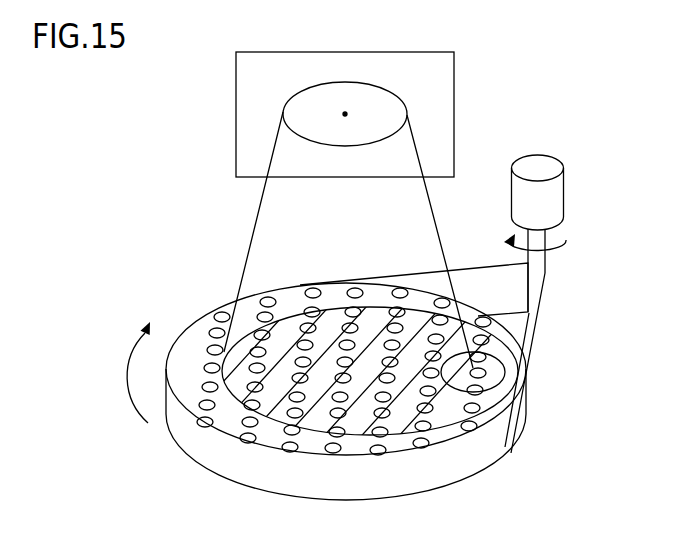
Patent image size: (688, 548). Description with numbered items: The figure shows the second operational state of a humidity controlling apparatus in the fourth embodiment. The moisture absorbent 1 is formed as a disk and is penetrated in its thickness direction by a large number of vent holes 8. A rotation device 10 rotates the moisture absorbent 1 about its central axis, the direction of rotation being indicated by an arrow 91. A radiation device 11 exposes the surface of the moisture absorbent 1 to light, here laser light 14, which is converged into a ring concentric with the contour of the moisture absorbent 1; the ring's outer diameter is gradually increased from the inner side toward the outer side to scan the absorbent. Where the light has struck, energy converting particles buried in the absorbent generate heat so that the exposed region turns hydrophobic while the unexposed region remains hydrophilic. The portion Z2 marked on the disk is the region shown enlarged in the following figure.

The moisture absorbent 1 is at (248, 465).
The vent holes 8 is at (427, 428).
The rotation device 10 is at (552, 201).
The radiation device 11 is at (454, 113).
The laser light 14 is at (268, 231).
The arrow 91 is at (126, 373).
The portion Z2 is at (502, 385).